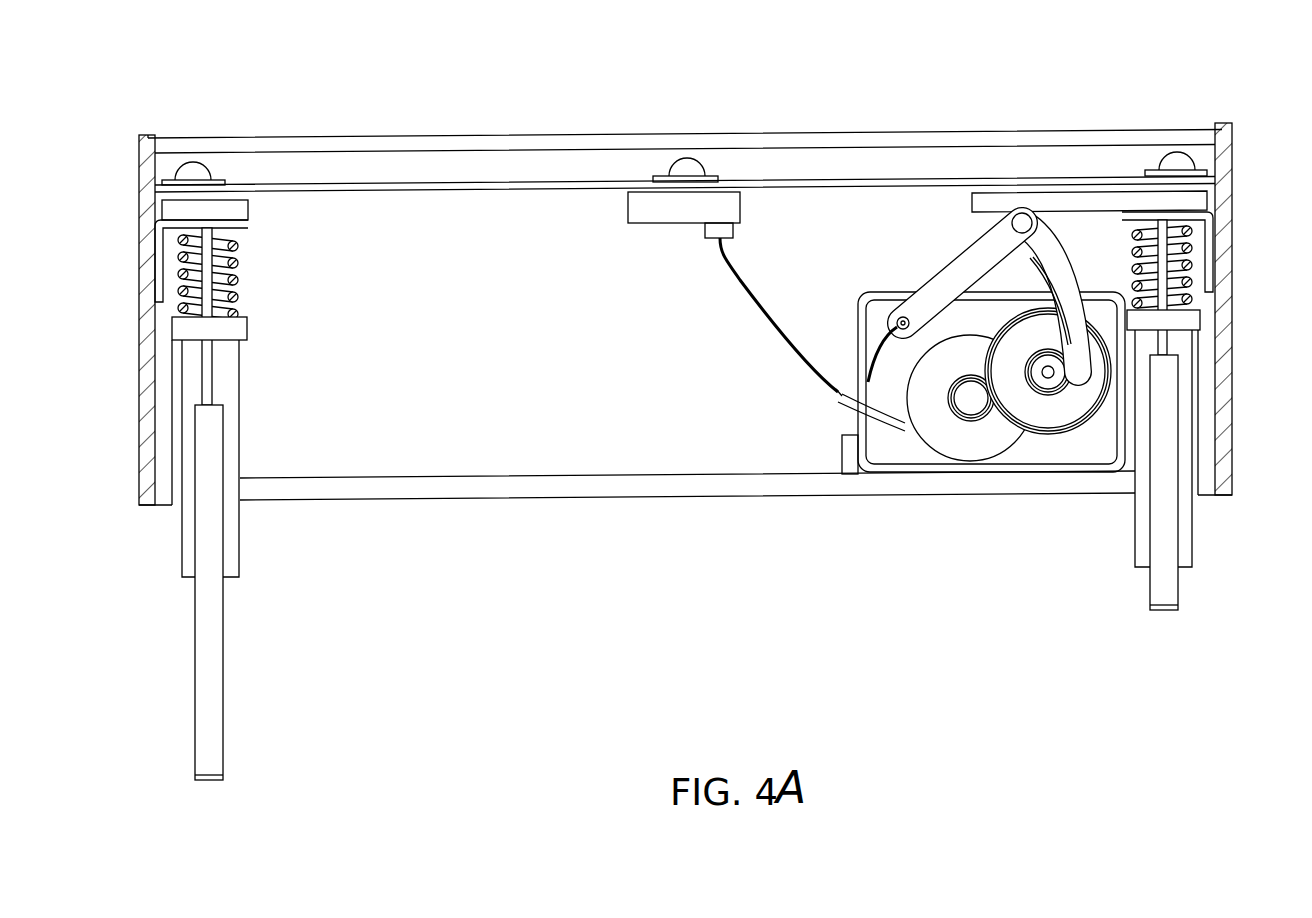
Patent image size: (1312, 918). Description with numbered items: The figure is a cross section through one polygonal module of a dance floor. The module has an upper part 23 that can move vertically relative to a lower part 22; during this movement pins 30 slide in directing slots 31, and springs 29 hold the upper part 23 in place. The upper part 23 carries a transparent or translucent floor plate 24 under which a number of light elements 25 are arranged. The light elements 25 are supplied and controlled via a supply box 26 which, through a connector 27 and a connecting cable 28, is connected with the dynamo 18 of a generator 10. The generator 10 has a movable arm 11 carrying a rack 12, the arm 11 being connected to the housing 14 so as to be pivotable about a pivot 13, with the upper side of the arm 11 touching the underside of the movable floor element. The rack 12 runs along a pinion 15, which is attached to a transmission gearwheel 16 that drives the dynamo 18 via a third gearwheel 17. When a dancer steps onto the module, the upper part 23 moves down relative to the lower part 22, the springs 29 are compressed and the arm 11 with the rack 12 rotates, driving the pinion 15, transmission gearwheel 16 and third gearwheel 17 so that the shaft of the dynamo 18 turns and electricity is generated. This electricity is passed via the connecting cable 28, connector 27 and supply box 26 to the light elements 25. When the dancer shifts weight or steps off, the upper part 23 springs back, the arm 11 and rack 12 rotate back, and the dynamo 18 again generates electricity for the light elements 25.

The generator 10 is at (852, 302).
The movable arm 11 is at (985, 257).
The rack 12 is at (1065, 386).
The pivot 13 is at (902, 318).
The housing 14 is at (865, 425).
The pinion 15 is at (1042, 384).
The transmission gearwheel 16 is at (1073, 412).
The third gearwheel 17 is at (969, 400).
The dynamo 18 is at (945, 437).
The lower part 22 is at (392, 498).
The upper part 23 is at (245, 120).
The floor plate 24 is at (368, 138).
The light elements 25 is at (180, 162).
The supply box 26 is at (645, 207).
The connector 27 is at (717, 232).
The connecting cable 28 is at (795, 362).
The springs 29 is at (193, 260).
The pins 30 is at (200, 362).
The directing slots 31 is at (205, 445).